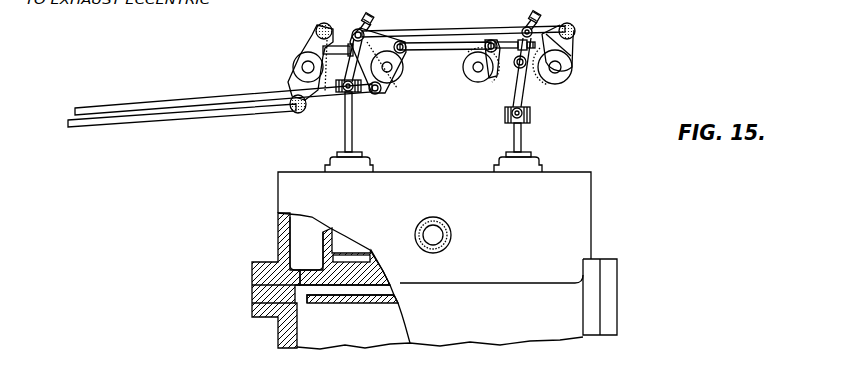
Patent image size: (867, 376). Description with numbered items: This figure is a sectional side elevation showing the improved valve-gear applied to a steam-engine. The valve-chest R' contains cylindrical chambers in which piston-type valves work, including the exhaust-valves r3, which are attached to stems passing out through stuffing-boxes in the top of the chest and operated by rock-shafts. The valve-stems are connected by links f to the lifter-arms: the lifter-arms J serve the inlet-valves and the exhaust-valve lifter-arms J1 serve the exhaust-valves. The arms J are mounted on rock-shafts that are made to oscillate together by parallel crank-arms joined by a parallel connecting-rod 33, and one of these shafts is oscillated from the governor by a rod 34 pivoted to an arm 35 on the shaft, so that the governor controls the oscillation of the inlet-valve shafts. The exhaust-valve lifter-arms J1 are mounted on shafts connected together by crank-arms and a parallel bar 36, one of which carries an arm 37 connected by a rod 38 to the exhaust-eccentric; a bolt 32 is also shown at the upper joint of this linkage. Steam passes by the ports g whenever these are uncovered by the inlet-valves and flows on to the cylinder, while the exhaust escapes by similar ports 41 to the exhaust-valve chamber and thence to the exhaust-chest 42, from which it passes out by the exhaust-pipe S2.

The lifter-arm J is at (315, 48).
The exhaust-valve lifter-arm J1 is at (373, 42).
The link f is at (348, 62).
The bolt 32 is at (374, 20).
The parallel connecting-rod 33 is at (497, 23).
The rod 34 is at (211, 114).
The arm 35 is at (295, 81).
The parallel bar 36 is at (437, 49).
The arm 37 is at (381, 90).
The rod 38 is at (174, 104).
The exhaust-valve r3 is at (378, 157).
The port 41 is at (318, 292).
The exhaust-chest 42 is at (297, 245).
The port g is at (328, 242).
The exhaust-pipe S2 is at (436, 235).
The valve-chest R' is at (447, 260).